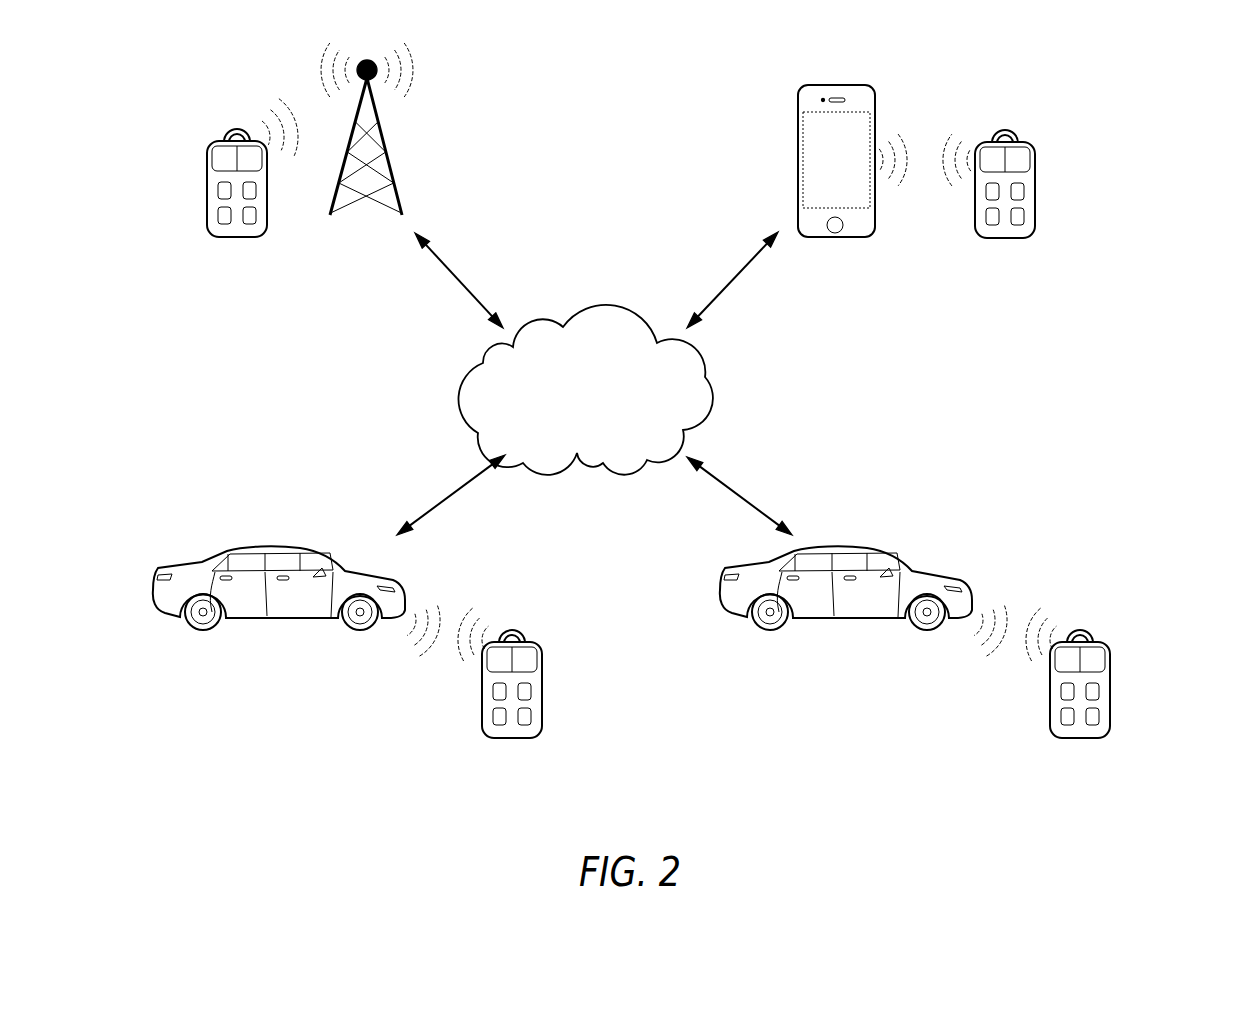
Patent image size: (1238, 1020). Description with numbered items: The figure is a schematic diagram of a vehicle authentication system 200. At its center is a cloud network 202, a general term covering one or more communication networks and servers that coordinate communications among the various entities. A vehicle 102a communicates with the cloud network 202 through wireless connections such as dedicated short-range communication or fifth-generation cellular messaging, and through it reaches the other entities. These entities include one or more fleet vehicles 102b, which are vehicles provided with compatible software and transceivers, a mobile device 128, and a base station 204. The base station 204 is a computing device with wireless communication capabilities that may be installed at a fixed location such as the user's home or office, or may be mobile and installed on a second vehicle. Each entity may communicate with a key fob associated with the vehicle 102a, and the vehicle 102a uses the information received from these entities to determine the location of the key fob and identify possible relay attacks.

The vehicle authentication system 200 is at (612, 823).
The cloud network 202 is at (712, 385).
The base station 204 is at (383, 143).
The mobile device 128 is at (797, 140).
The vehicle 102a is at (207, 555).
The fleet vehicle 102b is at (938, 572).